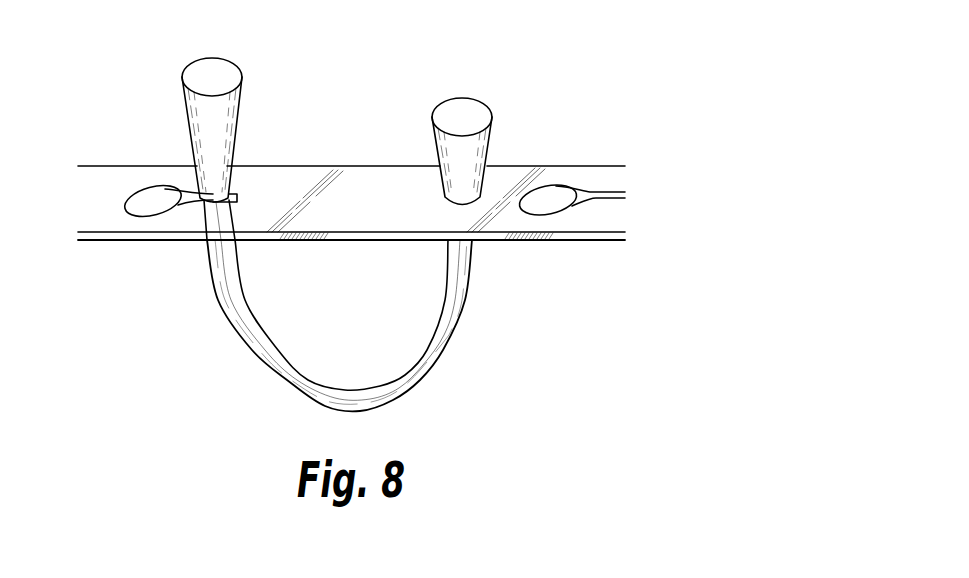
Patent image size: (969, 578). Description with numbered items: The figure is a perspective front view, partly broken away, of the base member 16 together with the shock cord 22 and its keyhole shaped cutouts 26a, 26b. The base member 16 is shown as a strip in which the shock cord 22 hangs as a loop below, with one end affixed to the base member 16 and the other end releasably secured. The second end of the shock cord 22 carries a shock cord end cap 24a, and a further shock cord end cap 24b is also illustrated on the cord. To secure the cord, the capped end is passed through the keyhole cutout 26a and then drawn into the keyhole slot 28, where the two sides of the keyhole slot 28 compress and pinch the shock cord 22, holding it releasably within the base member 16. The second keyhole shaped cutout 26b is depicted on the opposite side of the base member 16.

The base member 16 is at (332, 203).
The shock cord 22 is at (443, 320).
The shock cord end cap 24a is at (215, 85).
The shock cord end cap 24b is at (458, 120).
The keyhole shaped cutout 26a is at (158, 203).
The keyhole shaped cutout 26b is at (550, 200).
The keyhole slot 28 is at (212, 198).